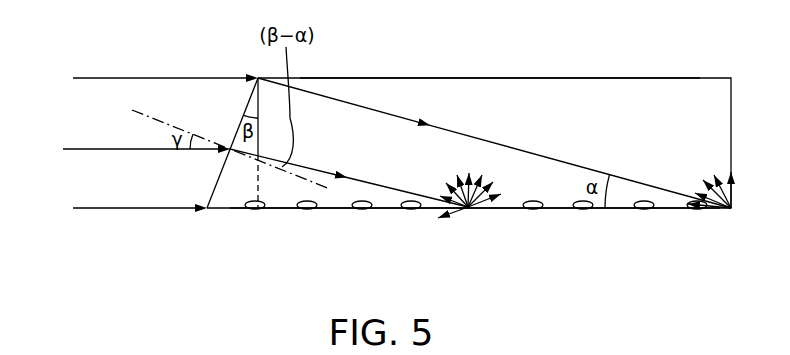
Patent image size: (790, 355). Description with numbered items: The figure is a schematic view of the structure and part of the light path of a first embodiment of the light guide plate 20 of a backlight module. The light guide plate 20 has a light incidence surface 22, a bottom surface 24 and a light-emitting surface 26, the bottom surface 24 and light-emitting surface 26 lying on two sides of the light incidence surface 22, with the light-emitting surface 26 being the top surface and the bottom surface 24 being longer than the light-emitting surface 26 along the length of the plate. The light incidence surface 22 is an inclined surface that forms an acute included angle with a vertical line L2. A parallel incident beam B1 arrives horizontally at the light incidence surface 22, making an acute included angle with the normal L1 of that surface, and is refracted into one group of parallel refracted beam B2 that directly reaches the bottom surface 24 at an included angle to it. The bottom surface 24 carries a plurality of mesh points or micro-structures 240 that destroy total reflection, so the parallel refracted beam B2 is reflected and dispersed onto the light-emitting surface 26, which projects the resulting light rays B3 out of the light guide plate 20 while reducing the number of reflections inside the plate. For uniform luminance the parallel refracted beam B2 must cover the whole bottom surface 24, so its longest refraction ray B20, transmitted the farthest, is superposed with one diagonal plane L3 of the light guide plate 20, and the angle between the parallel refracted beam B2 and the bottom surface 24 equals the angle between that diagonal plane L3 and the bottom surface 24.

The light guide plate 20 is at (590, 103).
The light incidence surface 22 is at (247, 109).
The bottom surface 24 is at (333, 208).
The micro-structures 240 is at (410, 208).
The light-emitting surface 26 is at (352, 78).
The parallel incident beam B1 is at (63, 72).
The parallel refracted beam B2 is at (349, 177).
The light rays B3 is at (584, 184).
The longest refraction ray B20 is at (494, 112).
The normal of the light incidence surface L1 is at (152, 117).
The vertical line L2 is at (262, 183).
The diagonal plane L3 is at (406, 118).